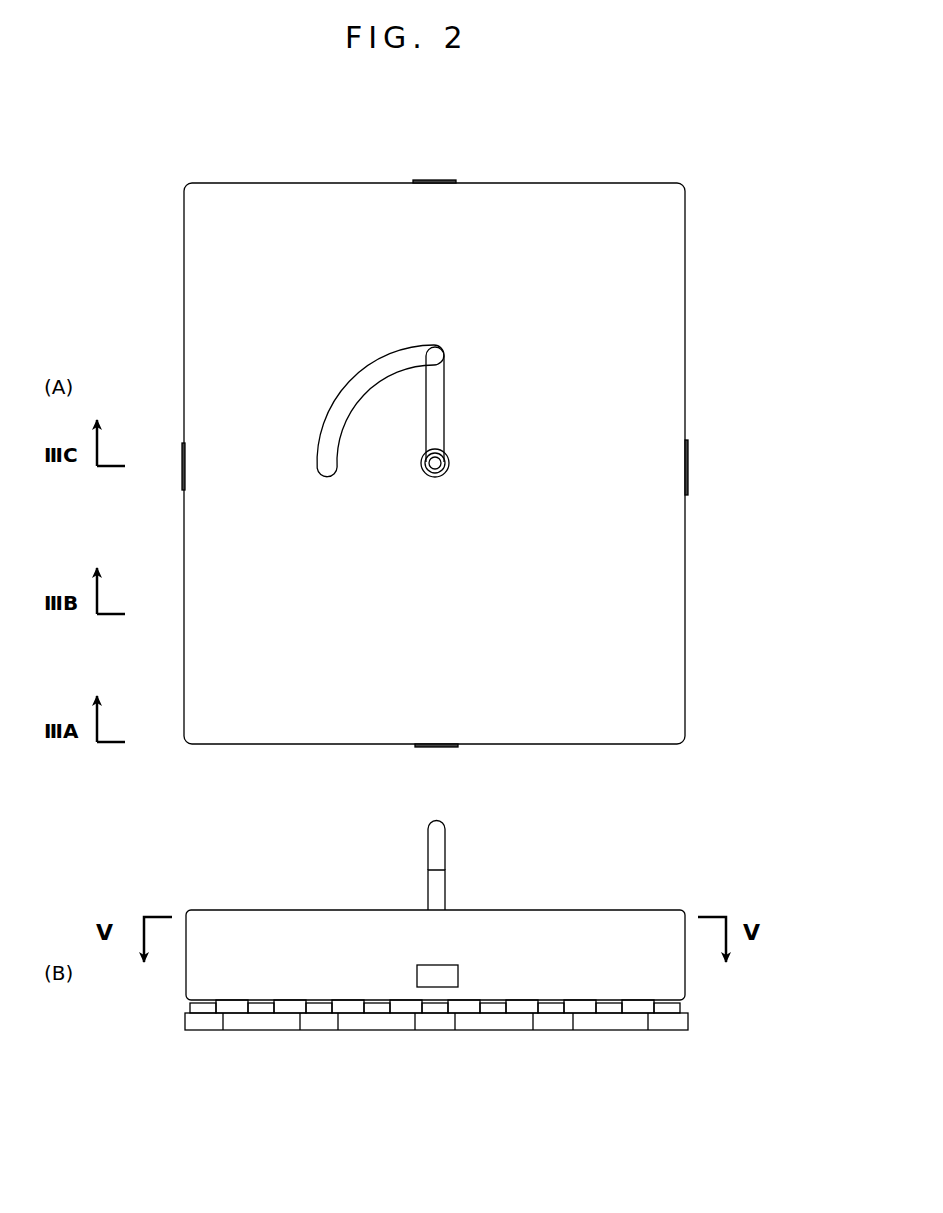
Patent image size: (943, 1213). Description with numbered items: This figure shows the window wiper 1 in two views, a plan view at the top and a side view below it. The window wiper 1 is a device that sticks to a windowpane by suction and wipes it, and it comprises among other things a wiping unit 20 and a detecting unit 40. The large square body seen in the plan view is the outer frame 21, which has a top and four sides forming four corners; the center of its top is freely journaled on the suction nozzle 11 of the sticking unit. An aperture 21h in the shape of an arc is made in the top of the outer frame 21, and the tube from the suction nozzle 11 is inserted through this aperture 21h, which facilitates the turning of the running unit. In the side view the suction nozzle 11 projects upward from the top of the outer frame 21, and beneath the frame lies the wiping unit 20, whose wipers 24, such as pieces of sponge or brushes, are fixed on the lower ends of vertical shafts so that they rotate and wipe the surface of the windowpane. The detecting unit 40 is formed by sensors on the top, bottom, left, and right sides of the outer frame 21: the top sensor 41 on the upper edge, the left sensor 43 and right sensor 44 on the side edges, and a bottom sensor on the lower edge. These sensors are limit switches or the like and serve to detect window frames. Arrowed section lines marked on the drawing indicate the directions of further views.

The window wiper 1 is at (701, 194).
The suction nozzle 11 is at (441, 889).
The wiping unit 20 is at (656, 1037).
The outer frame 21 is at (300, 210).
The aperture 21h is at (372, 372).
The wipers 24 is at (552, 1023).
The detecting unit 40 is at (478, 166).
The top sensor 41 is at (425, 180).
The left sensor 43 is at (183, 480).
The right sensor 44 is at (688, 458).